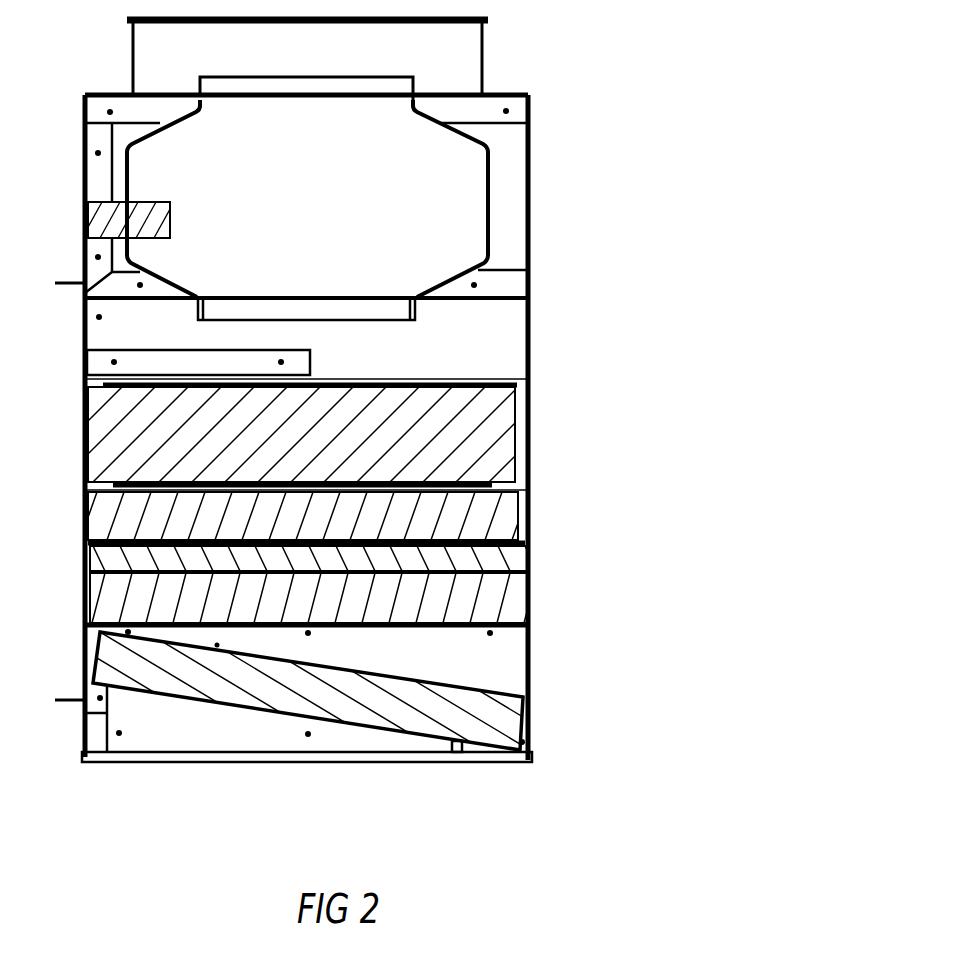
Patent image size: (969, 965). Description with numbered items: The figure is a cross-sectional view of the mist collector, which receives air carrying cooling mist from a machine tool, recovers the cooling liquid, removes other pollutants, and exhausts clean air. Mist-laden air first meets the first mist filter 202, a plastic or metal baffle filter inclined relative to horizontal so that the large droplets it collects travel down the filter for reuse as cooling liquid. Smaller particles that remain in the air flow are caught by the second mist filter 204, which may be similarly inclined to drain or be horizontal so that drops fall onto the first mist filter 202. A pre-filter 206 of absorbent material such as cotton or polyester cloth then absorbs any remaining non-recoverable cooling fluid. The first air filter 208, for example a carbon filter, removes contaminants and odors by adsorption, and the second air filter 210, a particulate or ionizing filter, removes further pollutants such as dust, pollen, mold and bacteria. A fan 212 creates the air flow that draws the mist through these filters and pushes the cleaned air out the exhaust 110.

The exhaust 110 is at (470, 52).
The fan 212 is at (468, 227).
The second air filter 210 is at (463, 432).
The first air filter 208 is at (472, 517).
The pre-filter 206 is at (475, 563).
The second mist filter 204 is at (472, 607).
The first mist filter 202 is at (463, 725).